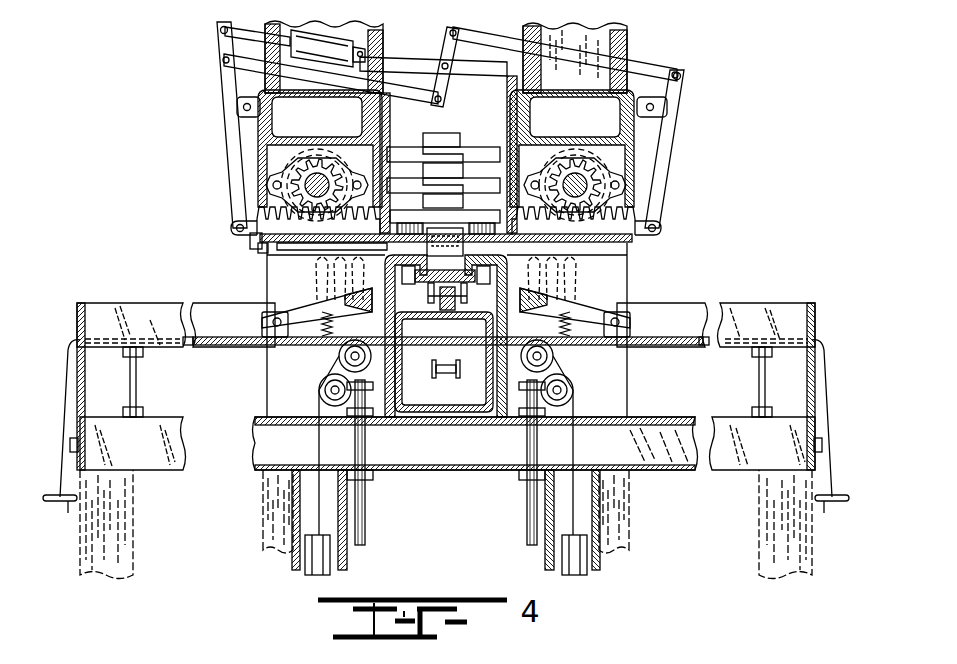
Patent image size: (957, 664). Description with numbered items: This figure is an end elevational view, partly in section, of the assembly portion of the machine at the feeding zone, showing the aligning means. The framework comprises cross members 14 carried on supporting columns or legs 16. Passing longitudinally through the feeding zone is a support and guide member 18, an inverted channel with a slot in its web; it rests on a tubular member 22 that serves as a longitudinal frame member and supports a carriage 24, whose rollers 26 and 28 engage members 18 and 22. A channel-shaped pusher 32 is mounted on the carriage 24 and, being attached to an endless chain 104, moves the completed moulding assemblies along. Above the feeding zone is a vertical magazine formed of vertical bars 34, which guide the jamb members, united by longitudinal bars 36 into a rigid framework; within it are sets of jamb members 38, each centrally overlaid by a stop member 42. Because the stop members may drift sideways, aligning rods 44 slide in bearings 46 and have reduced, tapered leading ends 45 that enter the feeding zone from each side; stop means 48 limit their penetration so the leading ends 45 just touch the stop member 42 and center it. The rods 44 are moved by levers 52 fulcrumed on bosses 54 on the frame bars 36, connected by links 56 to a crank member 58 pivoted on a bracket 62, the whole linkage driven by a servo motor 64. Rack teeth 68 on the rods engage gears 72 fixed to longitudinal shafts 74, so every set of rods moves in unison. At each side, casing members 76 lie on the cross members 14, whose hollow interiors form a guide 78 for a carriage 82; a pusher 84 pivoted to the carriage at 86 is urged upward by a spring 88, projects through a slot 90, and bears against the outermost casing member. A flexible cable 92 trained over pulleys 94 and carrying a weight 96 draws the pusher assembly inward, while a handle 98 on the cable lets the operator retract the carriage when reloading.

The cross member 14 is at (136, 304).
The supporting column 16 is at (135, 529).
The support and guide member 18 is at (446, 336).
The tubular member 22 is at (399, 412).
The carriage 24 is at (446, 284).
The roller 26 is at (441, 312).
The roller 28 is at (481, 286).
The pusher 32 is at (500, 245).
The vertical bar 34 is at (384, 127).
The longitudinal bar 36 is at (286, 140).
The jamb member 38 is at (473, 147).
The stop member 42 is at (434, 134).
The aligning rod 44 is at (262, 247).
The leading end 45 is at (401, 236).
The bearing 46 is at (320, 240).
The stop means 48 is at (255, 238).
The lever 52 is at (229, 151).
The boss 54 is at (237, 105).
The link 56 is at (243, 72).
The crank member 58 is at (446, 96).
The bracket 62 is at (403, 66).
The servo motor 64 is at (352, 32).
The rack teeth 68 is at (255, 215).
The gear 72 is at (300, 194).
The shaft 74 is at (317, 173).
The casing member 76 is at (318, 268).
The guide 78 is at (236, 344).
The carriage 82 is at (275, 338).
The pusher 84 is at (312, 310).
The pivot 86 is at (275, 318).
The spring 88 is at (325, 338).
The slot 90 is at (213, 305).
The flexible cable 92 is at (77, 338).
The pulley 94 is at (338, 357).
The weight 96 is at (312, 574).
The handle 98 is at (65, 504).
The chain 104 is at (447, 378).